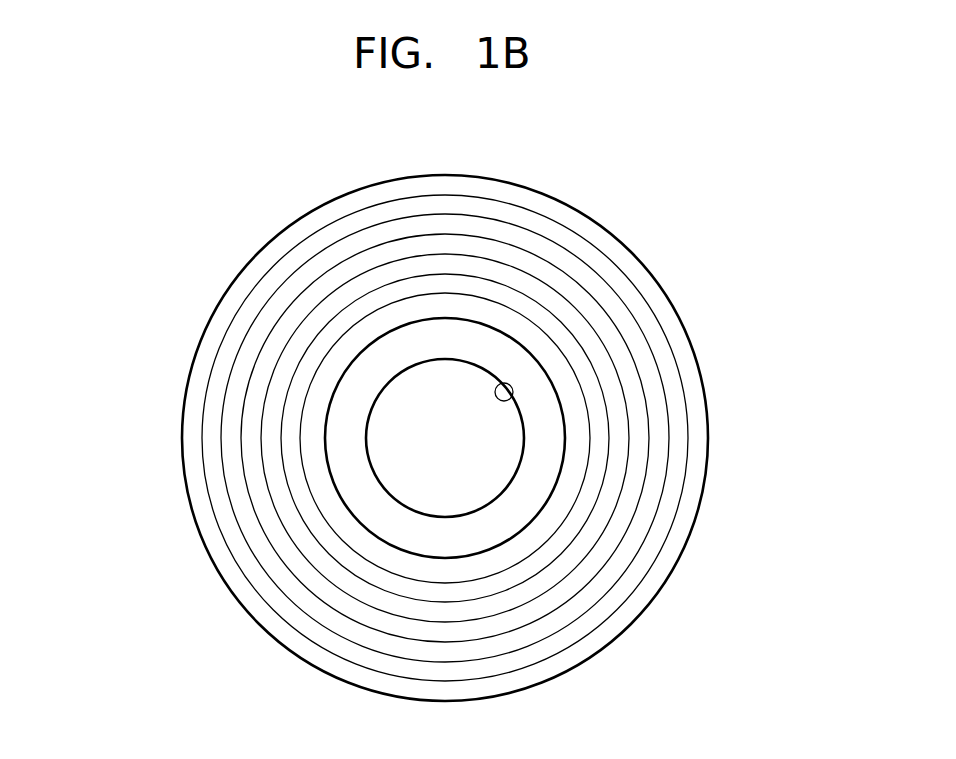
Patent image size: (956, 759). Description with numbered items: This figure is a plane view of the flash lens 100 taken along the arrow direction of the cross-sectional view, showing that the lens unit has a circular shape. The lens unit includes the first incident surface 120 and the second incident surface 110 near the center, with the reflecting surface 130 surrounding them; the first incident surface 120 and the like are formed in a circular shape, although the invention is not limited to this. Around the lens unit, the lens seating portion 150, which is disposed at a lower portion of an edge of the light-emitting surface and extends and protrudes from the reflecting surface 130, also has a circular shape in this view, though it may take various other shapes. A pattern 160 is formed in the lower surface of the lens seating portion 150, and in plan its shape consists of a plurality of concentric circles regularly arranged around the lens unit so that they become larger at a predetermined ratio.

The flash lens 100 is at (436, 421).
The second incident surface 110 is at (517, 400).
The first incident surface 120 is at (467, 380).
The reflecting surface 130 is at (350, 338).
The lens seating portion 150 is at (223, 297).
The pattern 160 is at (200, 437).